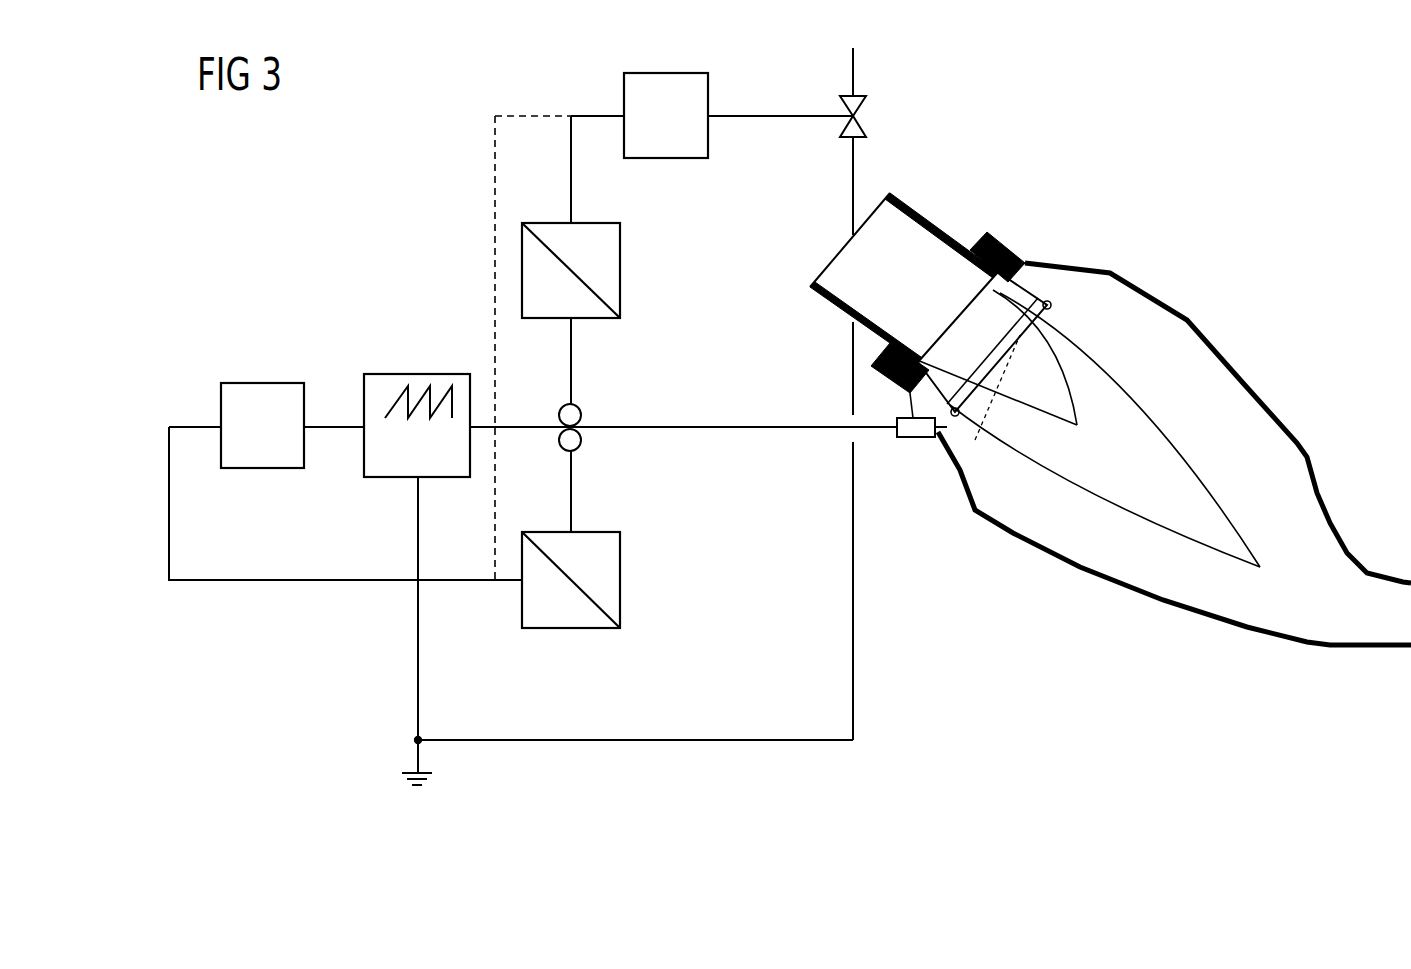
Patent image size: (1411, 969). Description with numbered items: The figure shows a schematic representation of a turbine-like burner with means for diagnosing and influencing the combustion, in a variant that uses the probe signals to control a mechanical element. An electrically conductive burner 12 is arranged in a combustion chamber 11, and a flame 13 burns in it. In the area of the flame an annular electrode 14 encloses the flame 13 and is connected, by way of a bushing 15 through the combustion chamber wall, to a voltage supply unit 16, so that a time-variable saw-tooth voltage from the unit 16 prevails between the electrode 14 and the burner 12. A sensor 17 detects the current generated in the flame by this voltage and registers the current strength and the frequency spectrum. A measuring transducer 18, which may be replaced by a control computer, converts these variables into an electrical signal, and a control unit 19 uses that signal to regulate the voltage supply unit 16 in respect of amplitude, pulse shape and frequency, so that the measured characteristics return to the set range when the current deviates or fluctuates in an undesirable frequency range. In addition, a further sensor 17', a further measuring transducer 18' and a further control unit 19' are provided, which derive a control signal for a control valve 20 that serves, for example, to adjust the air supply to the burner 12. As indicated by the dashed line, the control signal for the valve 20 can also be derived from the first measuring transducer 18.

The combustion chamber 11 is at (1241, 450).
The burner 12 is at (890, 238).
The flame 13 is at (1133, 408).
The annular electrode 14 is at (1047, 300).
The bushing 15 is at (915, 438).
The voltage supply unit 16 is at (431, 374).
The sensor 17 is at (601, 455).
The further sensor 17' is at (605, 405).
The measuring transducer 18 is at (601, 580).
The further measuring transducer 18' is at (604, 270).
The control unit 19 is at (262, 386).
The further control unit 19' is at (662, 91).
The control valve 20 is at (856, 118).